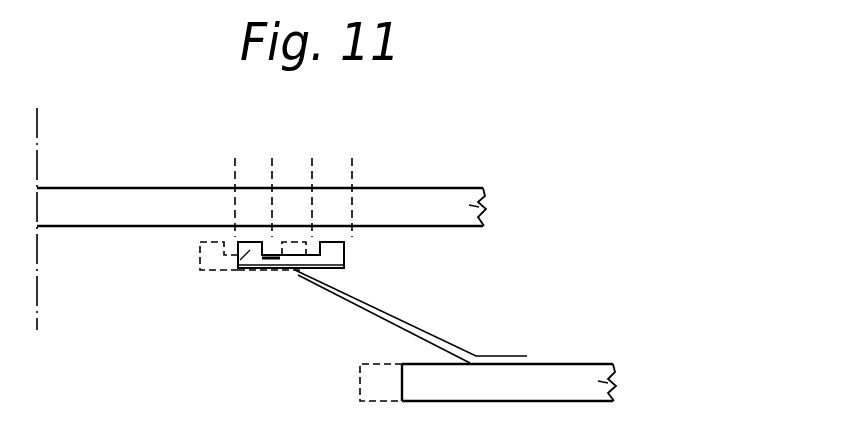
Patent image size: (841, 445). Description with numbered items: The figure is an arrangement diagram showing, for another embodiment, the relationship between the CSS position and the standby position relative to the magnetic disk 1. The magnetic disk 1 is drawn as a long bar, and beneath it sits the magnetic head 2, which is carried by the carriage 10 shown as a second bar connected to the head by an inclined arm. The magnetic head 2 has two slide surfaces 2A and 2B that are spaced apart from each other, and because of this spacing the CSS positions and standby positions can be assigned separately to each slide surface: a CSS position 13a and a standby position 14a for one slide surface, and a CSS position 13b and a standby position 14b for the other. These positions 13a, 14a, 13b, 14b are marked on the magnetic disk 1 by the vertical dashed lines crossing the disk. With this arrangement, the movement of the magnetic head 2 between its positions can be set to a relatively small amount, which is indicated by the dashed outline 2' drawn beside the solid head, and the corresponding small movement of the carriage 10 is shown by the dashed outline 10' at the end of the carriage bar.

The magnetic disk 1 is at (486, 209).
The magnetic head 2 is at (365, 302).
The magnetic head at moved position 2' is at (223, 258).
The slide surface 2A is at (345, 253).
The slide surface 2B is at (250, 270).
The carriage 10 is at (539, 385).
The carriage at moved position 10' is at (347, 385).
The CSS position 13a is at (326, 200).
The CSS position 13b is at (252, 202).
The standby position 14a is at (286, 200).
The standby position 14b is at (210, 204).